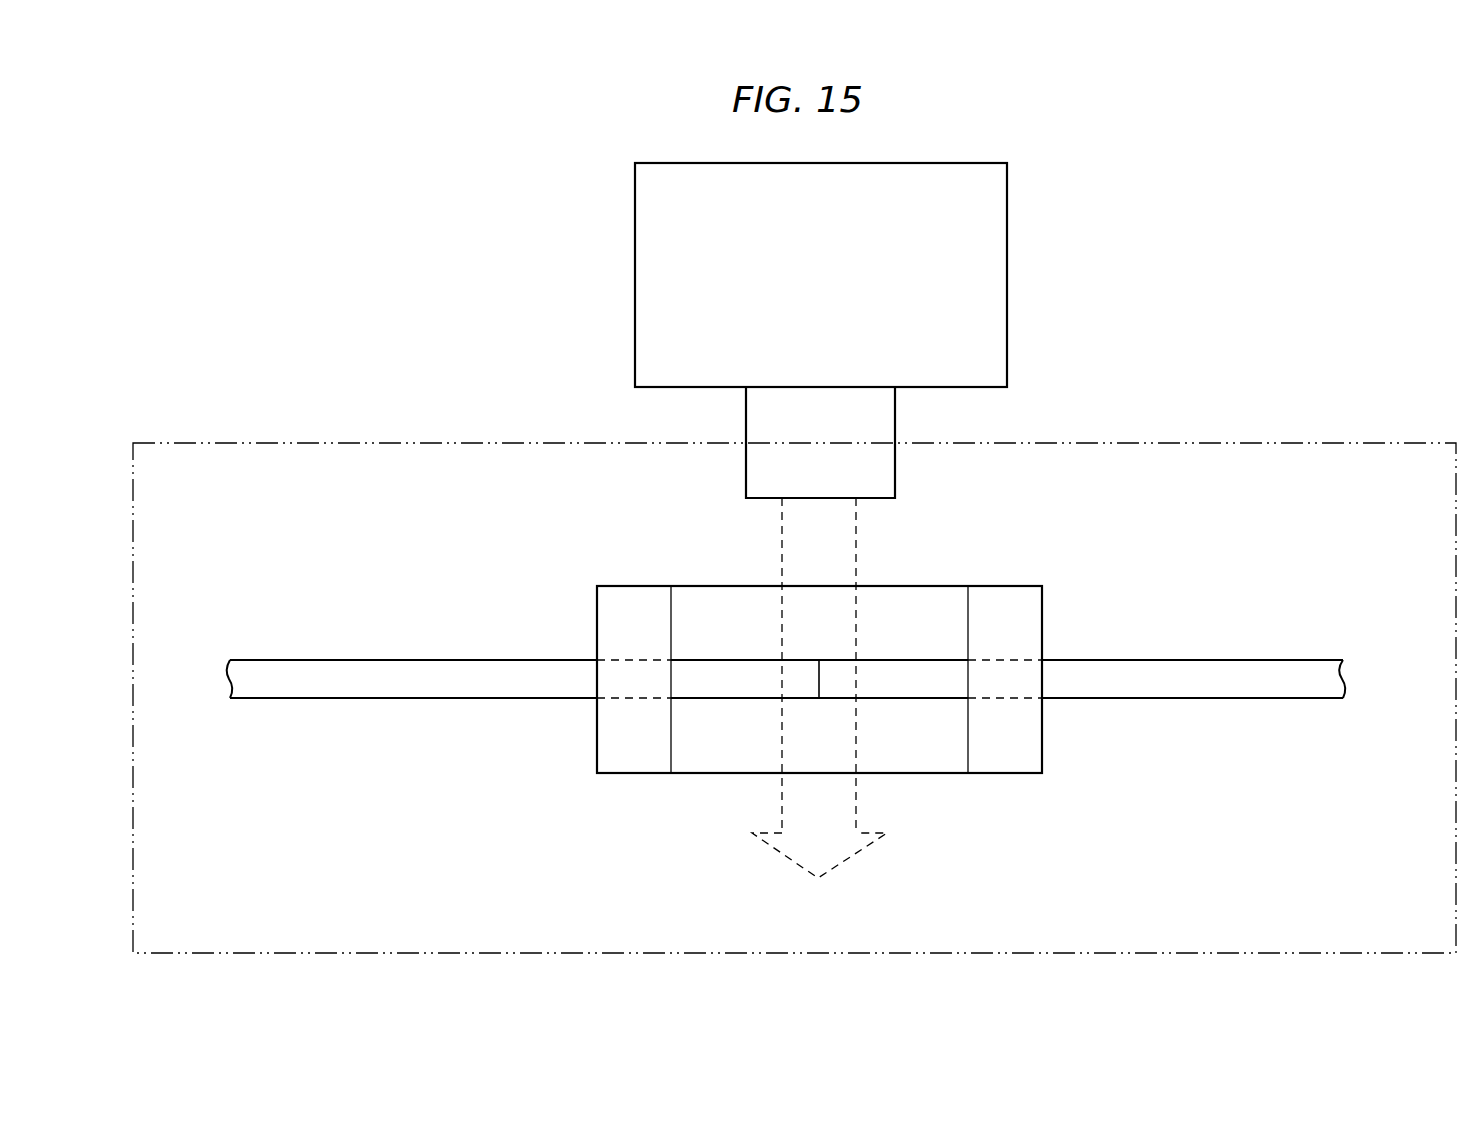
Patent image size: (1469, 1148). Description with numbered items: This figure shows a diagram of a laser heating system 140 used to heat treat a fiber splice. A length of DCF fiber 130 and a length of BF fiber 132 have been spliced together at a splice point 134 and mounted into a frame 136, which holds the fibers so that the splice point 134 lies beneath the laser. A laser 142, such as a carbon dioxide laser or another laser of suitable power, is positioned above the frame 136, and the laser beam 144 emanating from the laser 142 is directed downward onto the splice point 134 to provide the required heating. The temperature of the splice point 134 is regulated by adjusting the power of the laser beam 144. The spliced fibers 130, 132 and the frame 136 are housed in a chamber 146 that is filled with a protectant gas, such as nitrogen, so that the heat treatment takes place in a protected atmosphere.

The laser heating system 140 is at (1268, 194).
The laser 142 is at (960, 163).
The laser beam 144 is at (862, 541).
The chamber 146 is at (1198, 443).
The frame 136 is at (1012, 586).
The DCF fiber 130 is at (372, 660).
The BF fiber 132 is at (1253, 660).
The splice point 134 is at (820, 677).